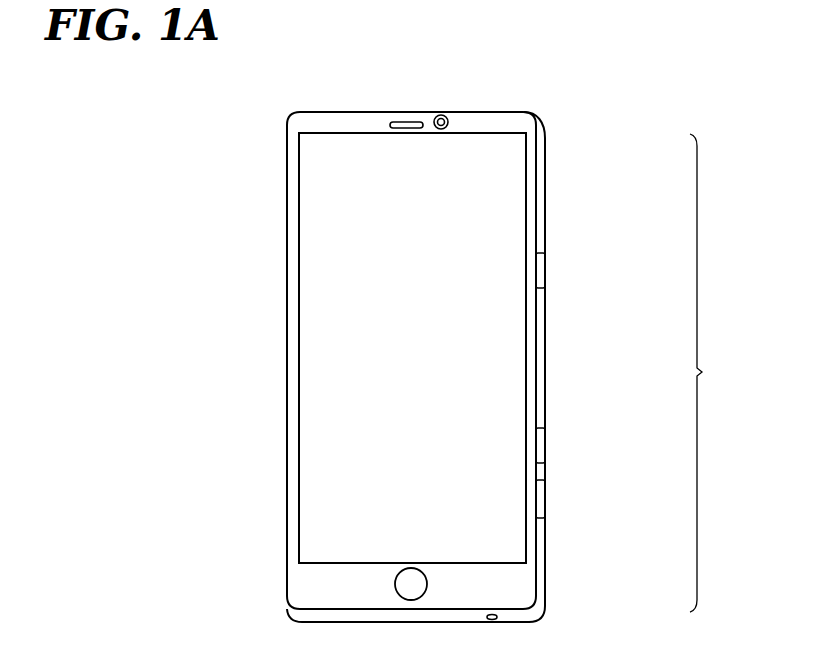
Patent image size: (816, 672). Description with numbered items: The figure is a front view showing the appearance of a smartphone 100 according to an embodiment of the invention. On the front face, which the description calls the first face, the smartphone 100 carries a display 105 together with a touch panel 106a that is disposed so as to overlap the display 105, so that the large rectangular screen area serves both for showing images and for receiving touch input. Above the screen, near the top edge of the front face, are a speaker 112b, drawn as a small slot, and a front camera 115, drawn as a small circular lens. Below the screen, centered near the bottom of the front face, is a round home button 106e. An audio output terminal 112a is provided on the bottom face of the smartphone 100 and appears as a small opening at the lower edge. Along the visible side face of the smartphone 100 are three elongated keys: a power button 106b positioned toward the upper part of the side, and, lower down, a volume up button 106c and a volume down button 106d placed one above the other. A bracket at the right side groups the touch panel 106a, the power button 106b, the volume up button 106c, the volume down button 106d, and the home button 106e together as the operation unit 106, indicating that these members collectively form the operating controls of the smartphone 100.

The smartphone 100 is at (287, 263).
The display 105 is at (520, 161).
The operation unit 106 is at (753, 386).
The touch panel 106a is at (412, 348).
The power button 106b is at (547, 268).
The volume up button 106c is at (547, 445).
The volume down button 106d is at (547, 500).
The home button 106e is at (427, 585).
The audio output terminal 112a is at (490, 620).
The speaker 112b is at (394, 119).
The front camera 115 is at (441, 113).